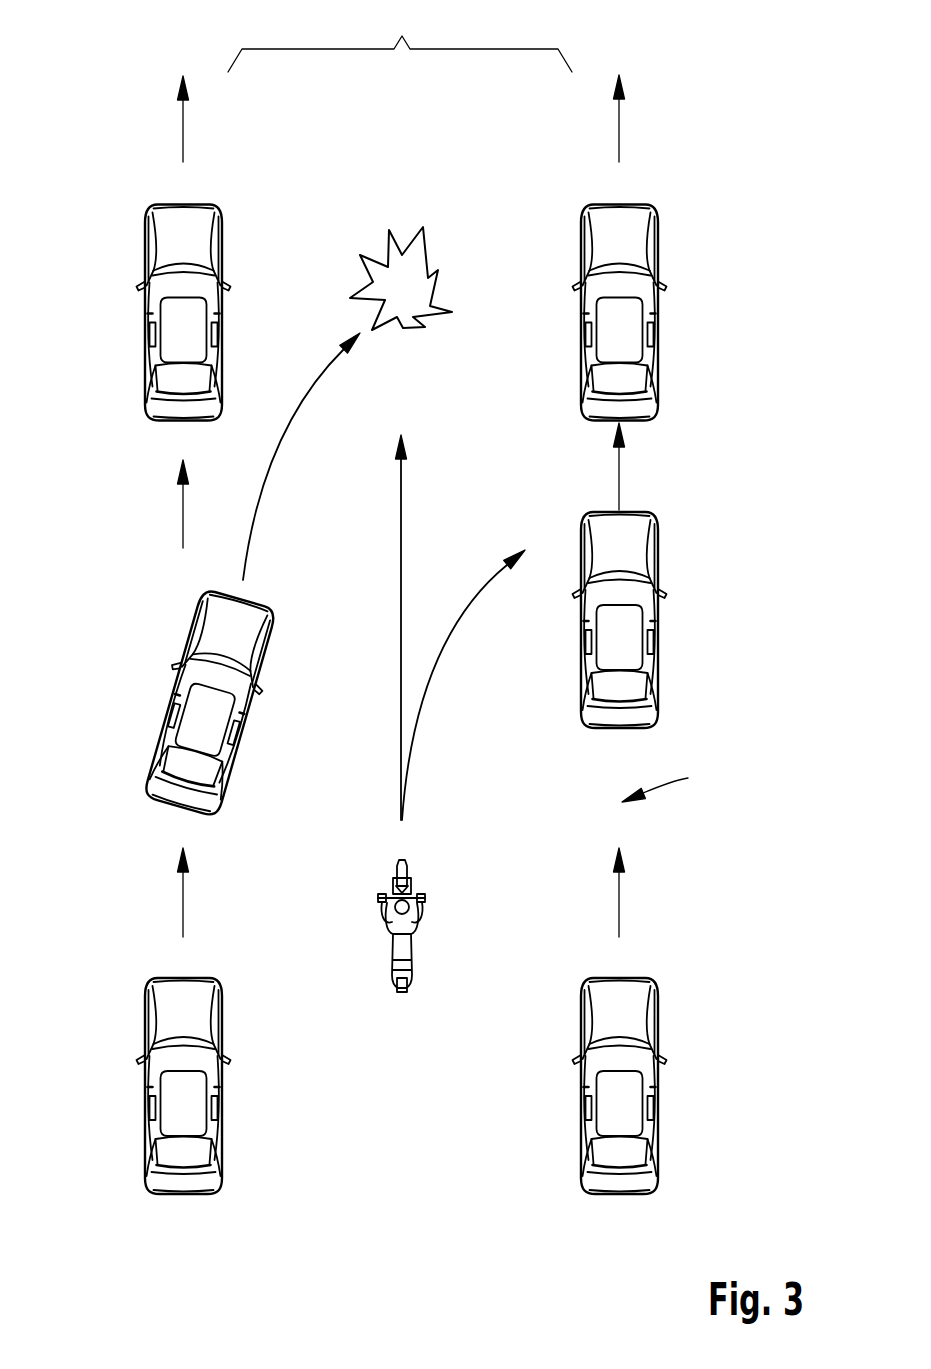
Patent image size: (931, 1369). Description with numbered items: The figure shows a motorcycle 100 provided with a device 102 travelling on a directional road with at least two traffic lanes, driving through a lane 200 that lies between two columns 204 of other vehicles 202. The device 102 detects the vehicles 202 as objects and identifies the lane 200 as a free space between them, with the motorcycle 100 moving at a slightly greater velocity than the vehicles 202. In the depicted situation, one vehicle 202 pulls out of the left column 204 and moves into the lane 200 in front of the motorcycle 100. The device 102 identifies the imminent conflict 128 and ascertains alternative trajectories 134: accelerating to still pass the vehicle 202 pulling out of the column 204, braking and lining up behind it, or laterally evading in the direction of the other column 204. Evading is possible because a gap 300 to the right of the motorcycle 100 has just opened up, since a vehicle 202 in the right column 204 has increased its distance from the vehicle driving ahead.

The motorcycle 100 is at (340, 926).
The device 102 is at (376, 908).
The imminent conflict 128 is at (442, 290).
The alternative trajectories 134 is at (400, 556).
The lane 200 is at (400, 39).
The vehicles 202 is at (145, 318).
The columns 204 is at (162, 171).
The gap 300 is at (676, 776).